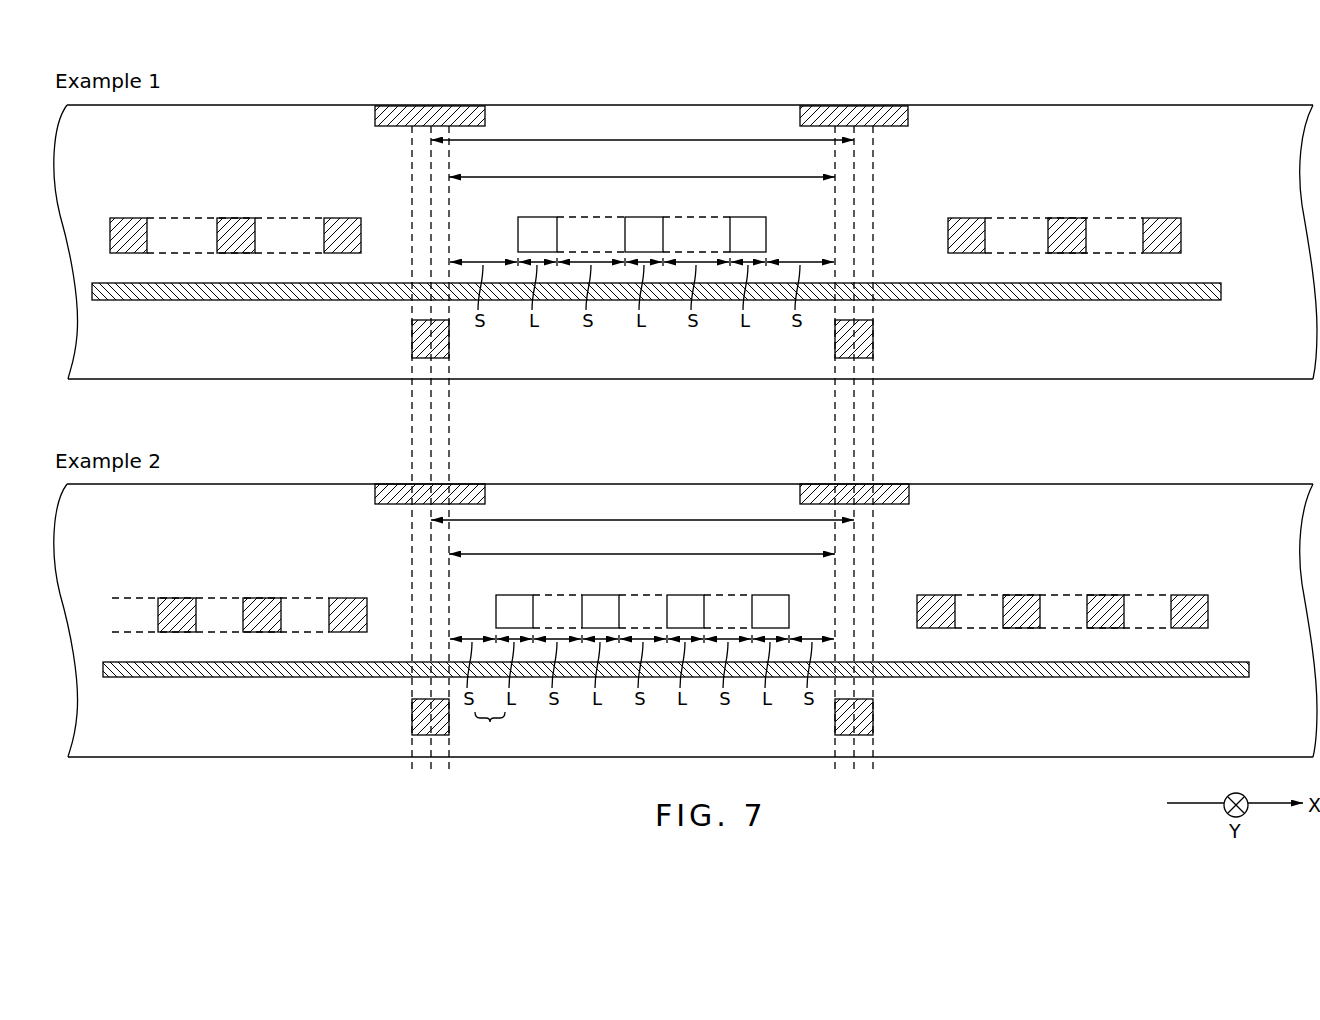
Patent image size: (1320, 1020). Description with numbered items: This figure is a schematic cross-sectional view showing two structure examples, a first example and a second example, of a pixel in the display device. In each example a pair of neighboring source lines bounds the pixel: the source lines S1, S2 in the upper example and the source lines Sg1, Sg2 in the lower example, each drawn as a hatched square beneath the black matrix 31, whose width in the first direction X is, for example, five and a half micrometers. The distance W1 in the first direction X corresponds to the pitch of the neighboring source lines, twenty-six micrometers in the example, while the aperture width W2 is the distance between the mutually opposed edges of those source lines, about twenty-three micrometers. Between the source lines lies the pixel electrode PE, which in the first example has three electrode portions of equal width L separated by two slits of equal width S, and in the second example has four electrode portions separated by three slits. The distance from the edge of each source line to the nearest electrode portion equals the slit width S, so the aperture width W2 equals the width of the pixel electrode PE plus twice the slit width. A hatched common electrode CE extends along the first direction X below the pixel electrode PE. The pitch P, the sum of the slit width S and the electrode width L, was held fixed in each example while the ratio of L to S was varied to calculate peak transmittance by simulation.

The black matrix 31 is at (427, 107).
The common electrode CE is at (1222, 291).
The pixel electrode PE is at (770, 211).
The source line S1 is at (412, 335).
The source line S2 is at (873, 337).
The source line Sg1 is at (412, 715).
The source line Sg2 is at (873, 715).
The distance W1 is at (621, 139).
The aperture width W2 is at (621, 175).
The pitch P is at (490, 730).